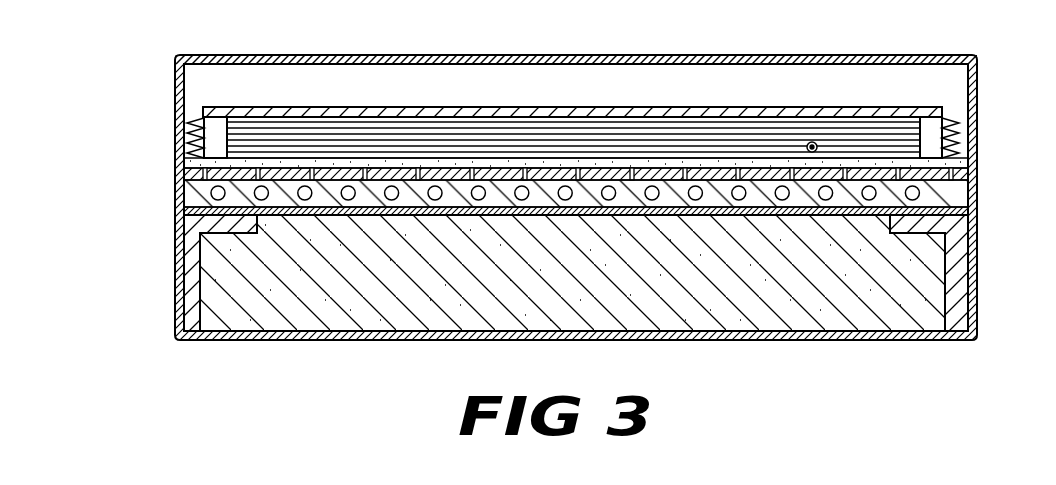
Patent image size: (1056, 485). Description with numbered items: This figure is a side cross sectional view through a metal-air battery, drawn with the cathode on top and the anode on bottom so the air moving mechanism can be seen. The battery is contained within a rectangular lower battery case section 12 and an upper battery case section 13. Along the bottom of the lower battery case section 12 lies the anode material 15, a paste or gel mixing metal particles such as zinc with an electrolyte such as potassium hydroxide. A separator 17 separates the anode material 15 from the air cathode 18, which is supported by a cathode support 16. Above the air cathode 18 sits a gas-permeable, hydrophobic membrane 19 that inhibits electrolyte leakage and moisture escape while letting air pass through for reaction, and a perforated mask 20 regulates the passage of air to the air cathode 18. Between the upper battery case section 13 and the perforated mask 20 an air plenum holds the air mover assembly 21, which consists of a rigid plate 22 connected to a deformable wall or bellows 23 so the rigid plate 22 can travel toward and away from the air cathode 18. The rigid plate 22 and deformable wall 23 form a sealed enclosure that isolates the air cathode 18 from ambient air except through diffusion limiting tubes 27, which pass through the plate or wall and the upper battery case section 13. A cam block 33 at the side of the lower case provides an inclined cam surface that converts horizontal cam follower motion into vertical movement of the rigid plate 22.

The lower battery case section 12 is at (970, 246).
The upper battery case section 13 is at (680, 62).
The anode material 15 is at (583, 302).
The cathode support 16 is at (190, 266).
The separator 17 is at (190, 211).
The air cathode 18 is at (190, 191).
The gas-permeable, hydrophobic membrane 19 is at (184, 163).
The perforated mask 20 is at (184, 173).
The air mover assembly 21 is at (600, 92).
The rigid plate 22 is at (413, 107).
The deformable wall or bellows 23 is at (515, 137).
The diffusion limiting tubes 27 is at (812, 142).
The cam block 33 is at (216, 130).